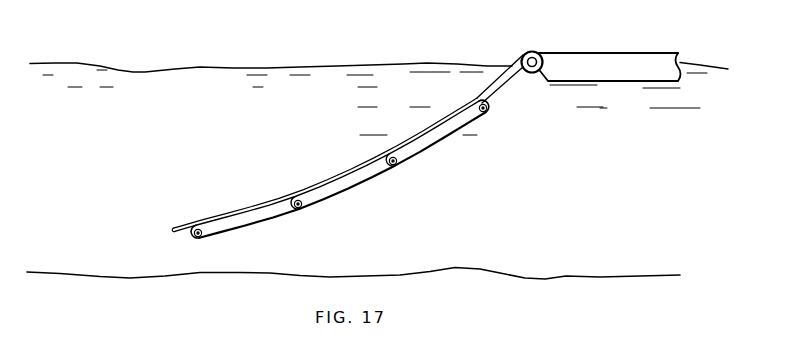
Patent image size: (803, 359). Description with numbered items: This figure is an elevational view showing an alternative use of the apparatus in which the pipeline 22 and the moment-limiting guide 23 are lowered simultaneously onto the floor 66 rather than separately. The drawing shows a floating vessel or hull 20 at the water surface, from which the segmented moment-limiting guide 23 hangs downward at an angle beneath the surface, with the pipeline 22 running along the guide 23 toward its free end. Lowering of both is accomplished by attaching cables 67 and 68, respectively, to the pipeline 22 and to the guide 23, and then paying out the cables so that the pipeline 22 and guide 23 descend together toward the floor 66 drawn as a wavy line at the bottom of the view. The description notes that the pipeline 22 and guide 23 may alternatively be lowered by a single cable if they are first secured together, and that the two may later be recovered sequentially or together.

The hull 20 is at (650, 53).
The pipeline 22 is at (375, 157).
The moment-limiting guide 23 is at (456, 150).
The floor 66 is at (578, 276).
The cable 67 is at (511, 67).
The cable 68 is at (503, 90).